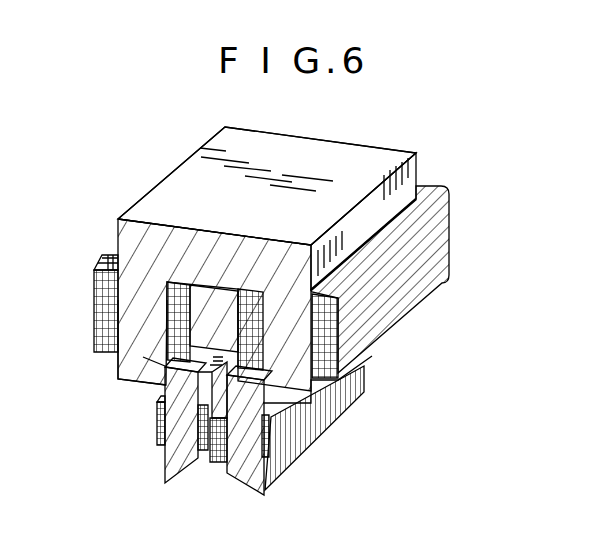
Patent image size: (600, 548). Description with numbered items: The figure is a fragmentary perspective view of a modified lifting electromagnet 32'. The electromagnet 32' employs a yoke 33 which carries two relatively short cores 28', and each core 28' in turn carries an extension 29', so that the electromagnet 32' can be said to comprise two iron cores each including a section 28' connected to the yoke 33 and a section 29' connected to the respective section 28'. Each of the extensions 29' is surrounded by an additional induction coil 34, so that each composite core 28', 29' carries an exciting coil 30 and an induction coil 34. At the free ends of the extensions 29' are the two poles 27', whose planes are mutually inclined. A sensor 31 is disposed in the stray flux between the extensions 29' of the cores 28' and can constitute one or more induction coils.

The yoke 33 is at (145, 238).
The electromagnet 32' is at (322, 183).
The exciting coil 30 is at (105, 306).
The core 28' is at (253, 338).
The extension 29' is at (193, 441).
The induction coil 34 is at (158, 421).
The pole 27' is at (185, 446).
The center grid element 31 is at (212, 462).